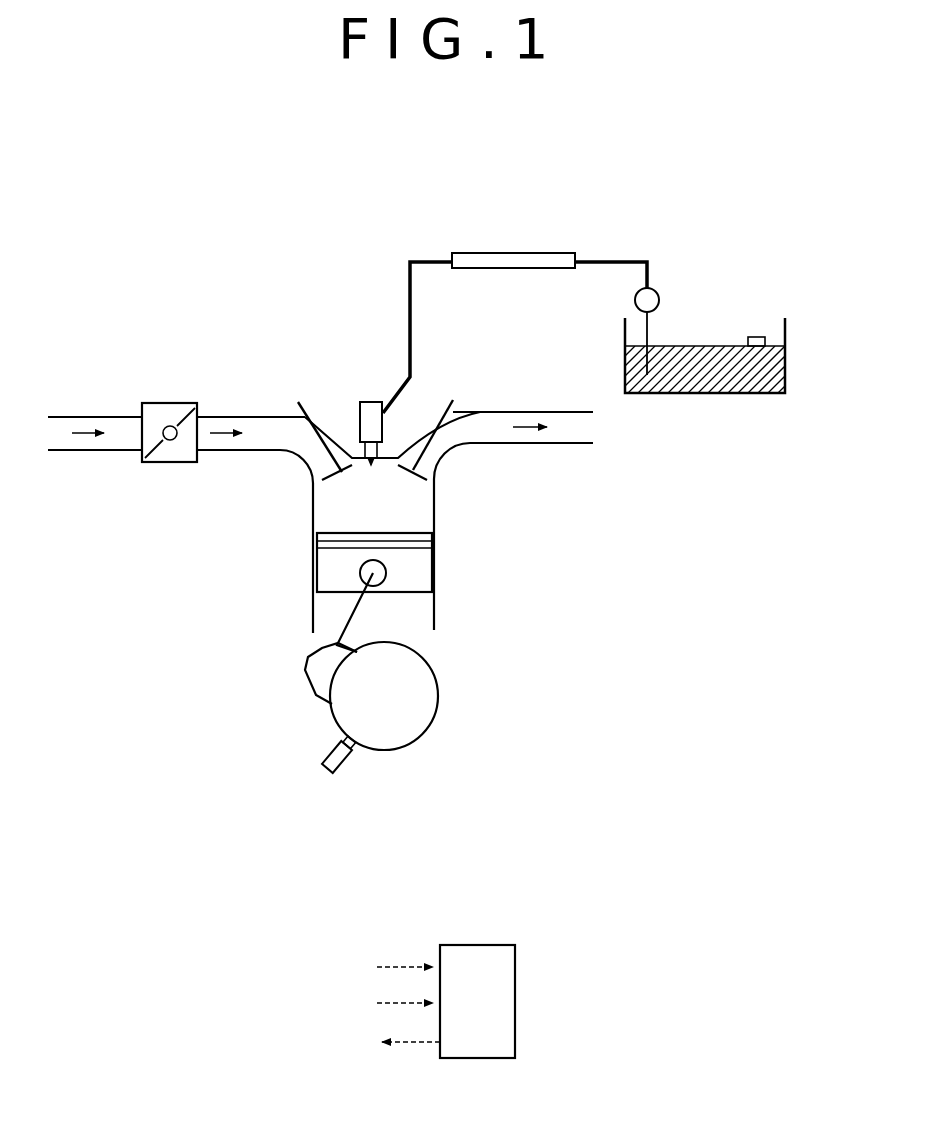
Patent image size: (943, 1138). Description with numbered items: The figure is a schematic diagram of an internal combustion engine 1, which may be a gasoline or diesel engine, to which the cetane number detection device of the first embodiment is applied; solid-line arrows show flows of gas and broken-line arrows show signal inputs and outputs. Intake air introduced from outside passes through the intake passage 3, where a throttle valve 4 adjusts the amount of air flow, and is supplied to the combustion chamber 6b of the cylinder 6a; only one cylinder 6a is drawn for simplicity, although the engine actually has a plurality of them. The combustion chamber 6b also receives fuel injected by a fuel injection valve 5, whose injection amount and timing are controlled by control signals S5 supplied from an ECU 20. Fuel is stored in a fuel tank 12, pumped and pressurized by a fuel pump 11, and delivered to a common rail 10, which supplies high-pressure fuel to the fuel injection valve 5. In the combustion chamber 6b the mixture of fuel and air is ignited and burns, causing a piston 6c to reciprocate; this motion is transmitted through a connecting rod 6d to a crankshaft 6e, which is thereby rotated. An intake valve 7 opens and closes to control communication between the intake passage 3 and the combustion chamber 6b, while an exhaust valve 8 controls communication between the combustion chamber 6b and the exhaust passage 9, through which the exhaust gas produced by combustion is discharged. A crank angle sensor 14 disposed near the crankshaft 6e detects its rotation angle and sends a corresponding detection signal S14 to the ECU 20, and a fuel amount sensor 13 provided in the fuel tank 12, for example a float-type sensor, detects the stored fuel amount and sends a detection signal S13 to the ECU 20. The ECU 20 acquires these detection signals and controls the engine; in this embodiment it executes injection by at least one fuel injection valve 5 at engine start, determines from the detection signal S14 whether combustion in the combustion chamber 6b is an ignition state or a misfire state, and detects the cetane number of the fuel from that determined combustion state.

The internal combustion engine 1 is at (297, 324).
The intake passage 3 is at (93, 452).
The throttle valve 4 is at (157, 460).
The fuel injection valve 5 is at (360, 408).
The cylinder 6a is at (436, 505).
The combustion chamber 6b is at (390, 513).
The piston 6c is at (420, 570).
The connecting rod 6d is at (345, 628).
The crankshaft 6e is at (433, 705).
The intake valve 7 is at (300, 402).
The exhaust valve 8 is at (450, 410).
The exhaust passage 9 is at (540, 445).
The common rail 10 is at (515, 268).
The fuel pump 11 is at (656, 291).
The fuel tank 12 is at (785, 318).
The fuel amount sensor 13 is at (748, 337).
The crank angle sensor 14 is at (326, 752).
The ECU 20 is at (484, 945).
The control signal S5 is at (370, 392).
The detection signal S13 is at (757, 346).
The detection signal S14 is at (327, 768).